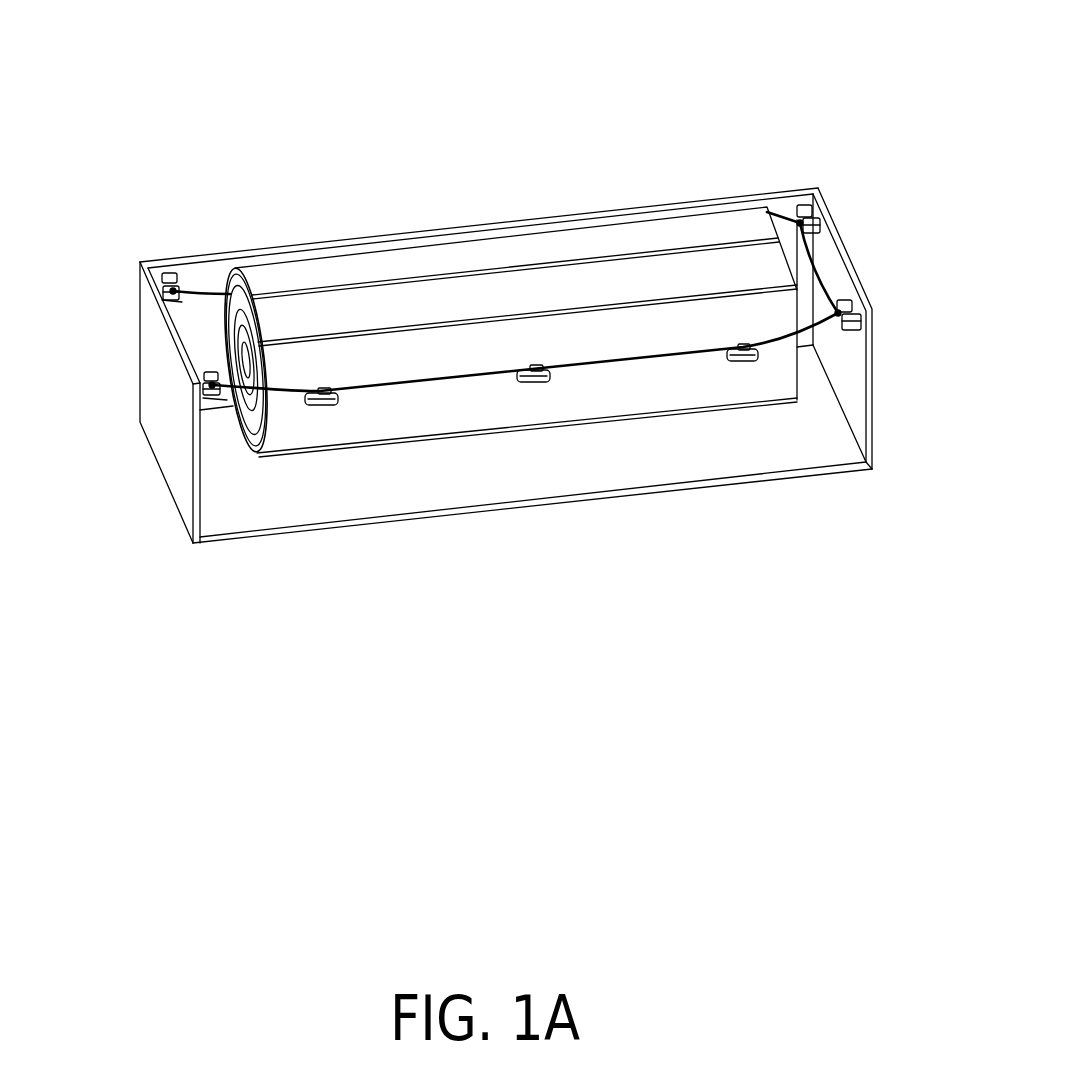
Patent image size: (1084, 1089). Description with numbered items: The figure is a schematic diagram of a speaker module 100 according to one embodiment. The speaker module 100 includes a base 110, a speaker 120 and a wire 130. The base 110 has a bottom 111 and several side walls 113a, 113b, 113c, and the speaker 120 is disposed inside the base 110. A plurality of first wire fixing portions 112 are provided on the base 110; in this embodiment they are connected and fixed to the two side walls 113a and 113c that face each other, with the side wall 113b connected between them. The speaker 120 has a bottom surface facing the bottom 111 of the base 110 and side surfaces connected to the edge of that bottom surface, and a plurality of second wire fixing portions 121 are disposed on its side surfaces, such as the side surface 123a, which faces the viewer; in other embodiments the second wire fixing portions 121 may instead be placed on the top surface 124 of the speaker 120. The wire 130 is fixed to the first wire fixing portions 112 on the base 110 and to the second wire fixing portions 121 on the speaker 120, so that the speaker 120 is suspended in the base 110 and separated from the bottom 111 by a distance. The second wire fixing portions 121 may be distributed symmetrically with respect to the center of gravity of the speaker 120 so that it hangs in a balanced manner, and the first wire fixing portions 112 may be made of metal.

The speaker module 100 is at (108, 46).
The base 110 is at (464, 337).
The bottom 111 is at (687, 469).
The first wire fixing portion 112 is at (803, 200).
The side wall 113a is at (153, 363).
The side wall 113b is at (272, 245).
The side wall 113c is at (855, 397).
The speaker 120 is at (507, 367).
The second wire fixing portion 121 is at (320, 410).
The side surface 123a is at (496, 426).
The top surface 124 is at (546, 273).
The wire 130 is at (817, 272).